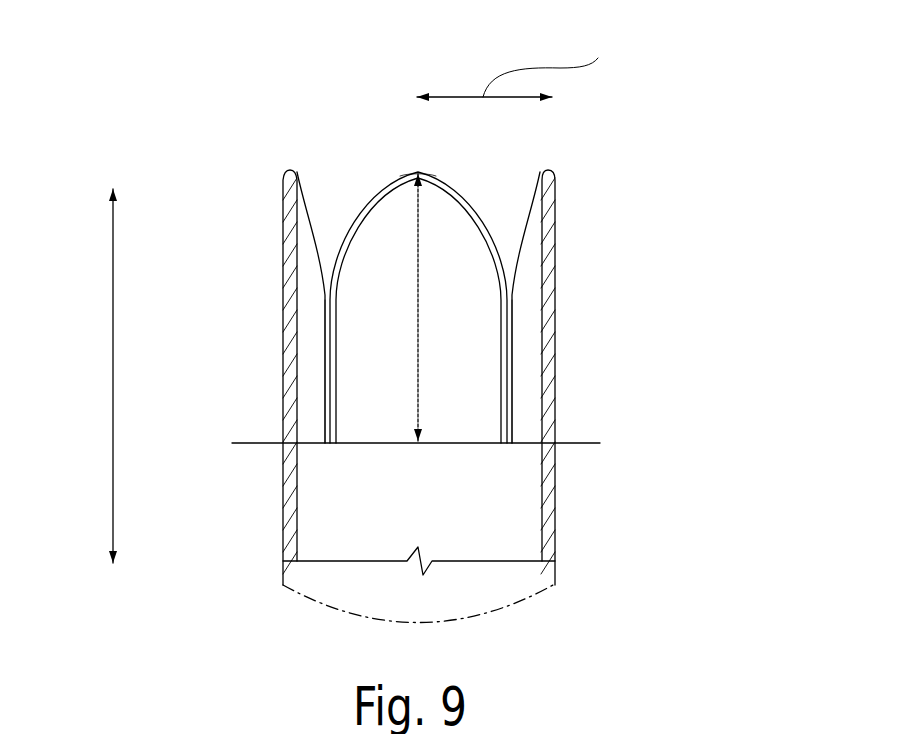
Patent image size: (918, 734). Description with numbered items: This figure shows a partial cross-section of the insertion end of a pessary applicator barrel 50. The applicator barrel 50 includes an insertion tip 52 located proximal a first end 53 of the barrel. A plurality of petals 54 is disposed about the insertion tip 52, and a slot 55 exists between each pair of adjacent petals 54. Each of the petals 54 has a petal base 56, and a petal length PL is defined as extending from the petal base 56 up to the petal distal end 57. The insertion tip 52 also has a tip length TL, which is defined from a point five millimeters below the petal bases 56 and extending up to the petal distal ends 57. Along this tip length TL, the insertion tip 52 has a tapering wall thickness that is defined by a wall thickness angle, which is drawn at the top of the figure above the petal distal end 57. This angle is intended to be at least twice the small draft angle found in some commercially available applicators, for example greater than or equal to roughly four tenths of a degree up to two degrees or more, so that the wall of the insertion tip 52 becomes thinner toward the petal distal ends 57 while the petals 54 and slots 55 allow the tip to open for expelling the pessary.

The applicator barrel 50 is at (399, 329).
The insertion tip 52 is at (237, 305).
The first end 53 is at (253, 548).
The petals 54 is at (302, 244).
The slot 55 is at (328, 390).
The petal base 56 is at (397, 444).
The petal distal end 57 is at (405, 176).
The petal length PL is at (418, 327).
The tip length TL is at (113, 418).